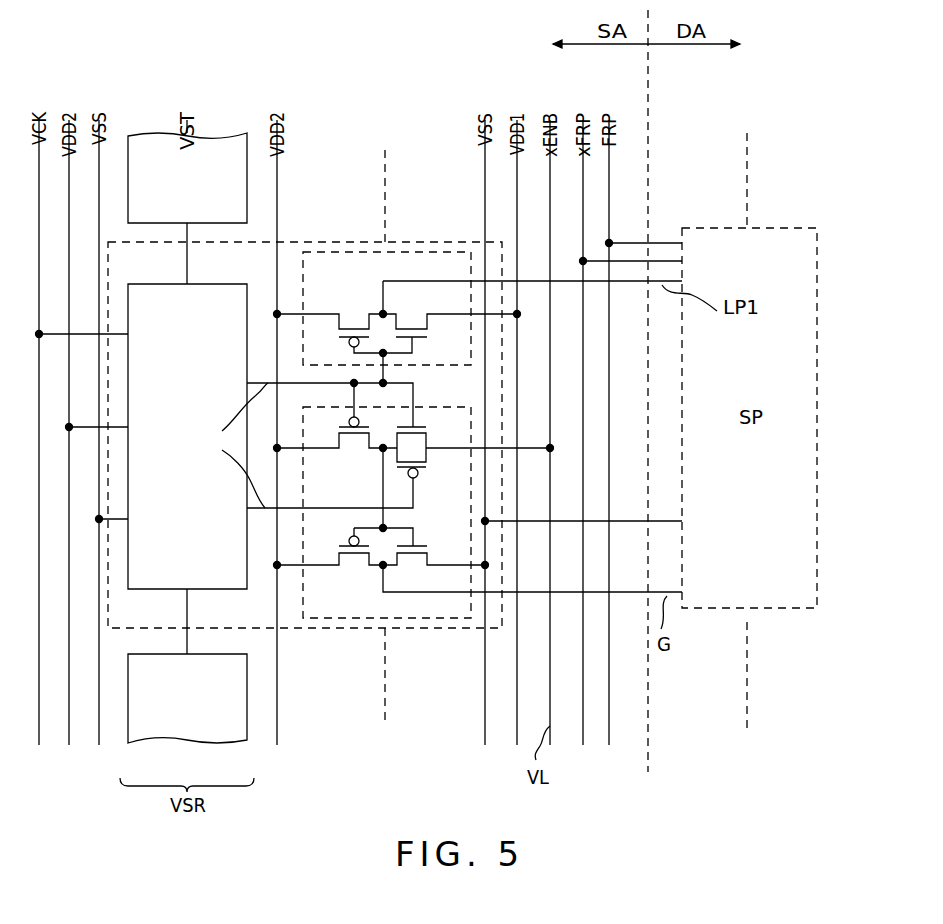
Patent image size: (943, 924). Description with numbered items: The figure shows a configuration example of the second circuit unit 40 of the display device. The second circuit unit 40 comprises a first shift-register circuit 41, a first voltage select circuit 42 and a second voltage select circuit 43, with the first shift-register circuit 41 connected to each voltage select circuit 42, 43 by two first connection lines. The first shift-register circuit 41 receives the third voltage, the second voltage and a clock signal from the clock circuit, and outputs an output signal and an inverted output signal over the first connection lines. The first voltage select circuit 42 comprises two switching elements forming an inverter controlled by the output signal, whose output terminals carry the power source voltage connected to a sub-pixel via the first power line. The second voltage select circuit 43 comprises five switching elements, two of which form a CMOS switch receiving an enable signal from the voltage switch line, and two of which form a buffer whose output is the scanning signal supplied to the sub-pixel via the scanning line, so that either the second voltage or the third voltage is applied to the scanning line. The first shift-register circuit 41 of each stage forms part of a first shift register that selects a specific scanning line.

The second circuit unit 40 is at (314, 242).
The first shift-register circuit 41 is at (222, 132).
The first voltage select circuit 42 is at (436, 252).
The second voltage select circuit 43 is at (412, 620).